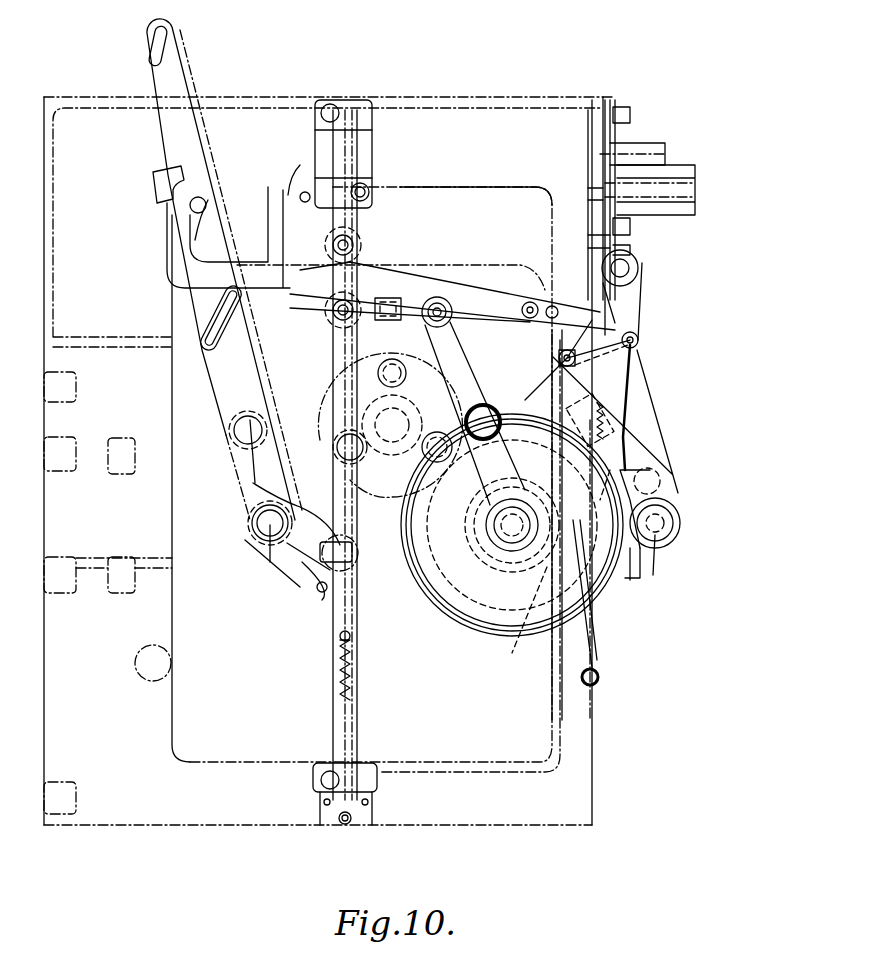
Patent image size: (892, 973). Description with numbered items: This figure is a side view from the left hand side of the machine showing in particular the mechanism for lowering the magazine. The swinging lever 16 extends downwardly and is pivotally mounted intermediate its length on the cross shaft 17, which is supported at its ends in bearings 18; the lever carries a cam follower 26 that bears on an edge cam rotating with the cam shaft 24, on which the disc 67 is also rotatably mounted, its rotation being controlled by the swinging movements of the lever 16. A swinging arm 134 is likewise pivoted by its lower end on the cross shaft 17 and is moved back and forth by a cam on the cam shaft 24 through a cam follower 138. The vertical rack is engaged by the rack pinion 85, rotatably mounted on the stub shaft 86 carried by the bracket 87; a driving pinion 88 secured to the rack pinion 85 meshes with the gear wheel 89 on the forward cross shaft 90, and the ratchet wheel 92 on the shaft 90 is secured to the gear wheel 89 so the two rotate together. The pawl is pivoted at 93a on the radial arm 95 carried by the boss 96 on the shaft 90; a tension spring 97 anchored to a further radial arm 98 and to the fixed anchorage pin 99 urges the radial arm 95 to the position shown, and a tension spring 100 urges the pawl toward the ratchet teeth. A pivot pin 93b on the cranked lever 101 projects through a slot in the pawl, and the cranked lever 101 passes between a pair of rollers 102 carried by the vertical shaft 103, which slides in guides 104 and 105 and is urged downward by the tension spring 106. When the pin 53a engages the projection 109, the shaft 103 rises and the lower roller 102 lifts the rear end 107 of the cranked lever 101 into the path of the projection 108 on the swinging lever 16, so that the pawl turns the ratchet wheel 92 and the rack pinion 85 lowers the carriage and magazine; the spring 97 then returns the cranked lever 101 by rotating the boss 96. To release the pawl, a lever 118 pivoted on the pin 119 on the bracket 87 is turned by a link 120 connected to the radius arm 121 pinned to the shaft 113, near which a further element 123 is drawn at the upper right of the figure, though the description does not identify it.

The swinging lever 16 is at (180, 80).
The cross shaft 17 is at (278, 540).
The bearings 18 is at (258, 545).
The cam shaft 24 is at (392, 440).
The cam follower 26 is at (232, 428).
The pin 53a is at (317, 595).
The disc 67 is at (345, 432).
The rack pinion 85 is at (668, 535).
The stub shaft 86 is at (645, 565).
The bracket 87 is at (632, 582).
The driving pinion 88 is at (672, 516).
The gear wheel 89 is at (592, 612).
The forward cross shaft 90 is at (505, 530).
The ratchet wheel 92 is at (430, 598).
The pivot of pawl 93a is at (600, 378).
The pivot pin 93b is at (670, 450).
The radial arm 95 is at (618, 412).
The boss 96 is at (468, 510).
The tension spring 97 is at (535, 625).
The further radial arm 98 is at (545, 570).
The fixed anchorage pin 99 is at (600, 682).
The tension spring 100 is at (655, 415).
The cranked lever 101 is at (610, 405).
The rollers 102 is at (355, 245).
The vertical shaft 103 is at (338, 362).
The upper guide 104 is at (368, 151).
The lower guide 105 is at (368, 818).
The tension spring 106 is at (360, 706).
The rear end of cranked lever 107 is at (183, 228).
The projection 108 is at (178, 187).
The projection 109 is at (352, 553).
The pivot pin 113 is at (640, 272).
The lever 118 is at (628, 440).
The pivot pin 119 is at (660, 478).
The link 120 is at (612, 366).
The radius arm 121 is at (640, 296).
The pin 123 is at (618, 250).
The swinging arm 134 is at (162, 188).
The cam follower 138 is at (466, 418).